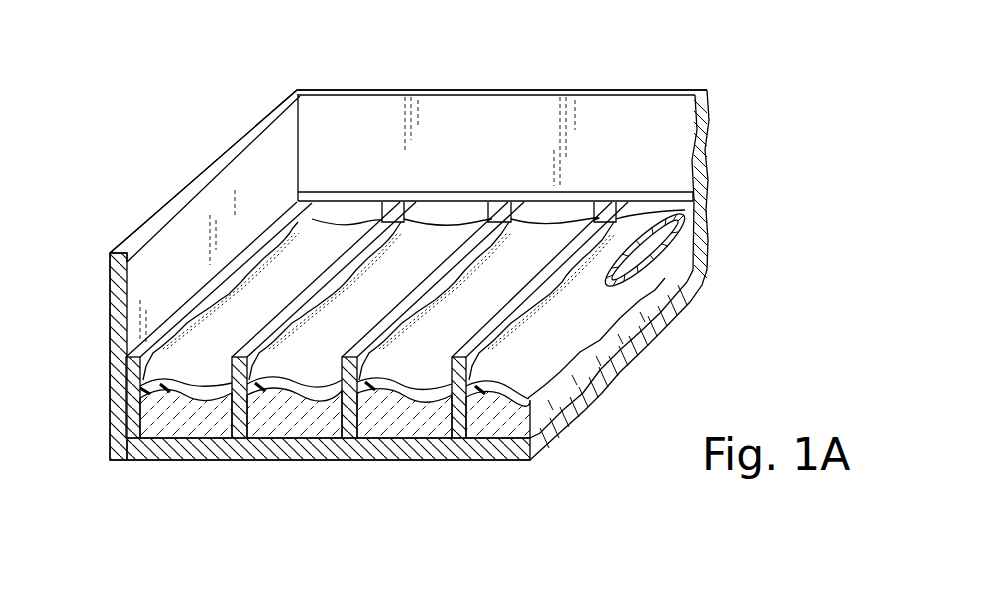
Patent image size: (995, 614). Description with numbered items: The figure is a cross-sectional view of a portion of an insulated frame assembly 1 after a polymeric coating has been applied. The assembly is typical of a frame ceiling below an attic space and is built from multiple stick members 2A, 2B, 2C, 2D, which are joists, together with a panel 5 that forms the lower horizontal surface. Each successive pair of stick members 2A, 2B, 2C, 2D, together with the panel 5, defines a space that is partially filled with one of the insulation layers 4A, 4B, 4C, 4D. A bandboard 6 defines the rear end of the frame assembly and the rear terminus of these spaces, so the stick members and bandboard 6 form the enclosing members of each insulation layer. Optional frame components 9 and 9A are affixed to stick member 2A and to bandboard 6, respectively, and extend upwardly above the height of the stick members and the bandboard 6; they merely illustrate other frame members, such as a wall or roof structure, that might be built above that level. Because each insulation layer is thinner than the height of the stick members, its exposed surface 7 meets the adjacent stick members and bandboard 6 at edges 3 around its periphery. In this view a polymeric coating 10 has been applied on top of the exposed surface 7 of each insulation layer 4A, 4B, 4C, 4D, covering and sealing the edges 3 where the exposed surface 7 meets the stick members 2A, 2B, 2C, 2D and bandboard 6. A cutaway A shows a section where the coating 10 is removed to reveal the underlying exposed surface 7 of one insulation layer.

The insulated frame assembly 1 is at (177, 166).
The frame component 9 is at (153, 267).
The frame component 9A is at (482, 142).
The bandboard 6 is at (637, 212).
The panel 5 is at (283, 460).
The exposed surface 7 is at (705, 242).
The cutaway A is at (650, 266).
The stick member 2A is at (140, 440).
The stick member 2B is at (240, 437).
The stick member 2C is at (353, 440).
The stick member 2D is at (457, 440).
The insulation layer 4A is at (178, 425).
The insulation layer 4B is at (263, 418).
The insulation layer 4C is at (380, 422).
The insulation layer 4D is at (482, 445).
The polymeric coating 10 is at (219, 360).
The edges 3 is at (280, 253).